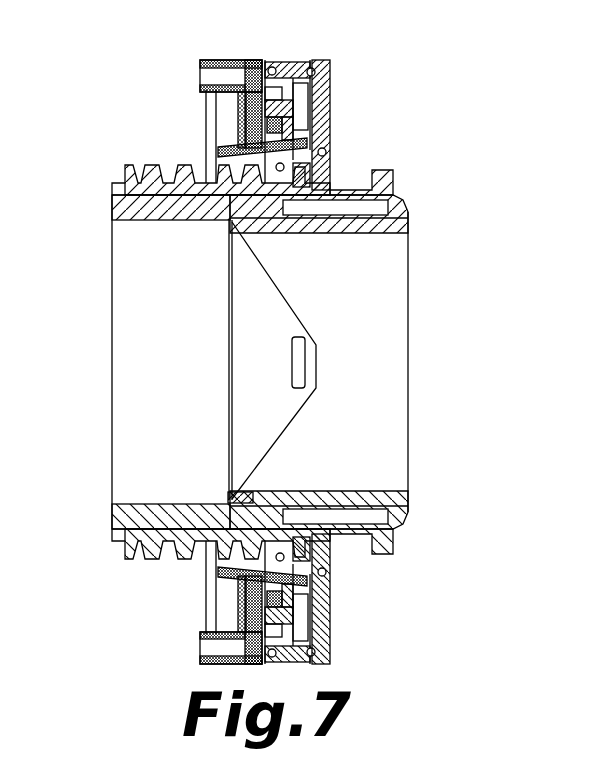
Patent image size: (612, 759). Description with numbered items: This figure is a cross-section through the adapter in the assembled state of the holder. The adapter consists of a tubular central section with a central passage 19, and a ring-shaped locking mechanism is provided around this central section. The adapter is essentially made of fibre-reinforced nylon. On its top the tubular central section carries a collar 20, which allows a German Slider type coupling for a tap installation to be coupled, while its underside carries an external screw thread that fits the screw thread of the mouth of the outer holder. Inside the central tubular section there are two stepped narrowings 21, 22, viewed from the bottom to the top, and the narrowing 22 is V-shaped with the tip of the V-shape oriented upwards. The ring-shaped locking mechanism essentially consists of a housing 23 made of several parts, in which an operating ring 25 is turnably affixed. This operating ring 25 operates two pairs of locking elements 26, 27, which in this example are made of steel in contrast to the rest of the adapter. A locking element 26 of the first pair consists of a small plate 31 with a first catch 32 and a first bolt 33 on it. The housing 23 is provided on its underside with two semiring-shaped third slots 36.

The central passage 19 is at (356, 355).
The collar 20 is at (393, 193).
The stepped narrowing 21 is at (229, 313).
The stepped narrowing 22 is at (252, 260).
The housing 23 is at (330, 122).
The operating ring 25 is at (305, 52).
The locking element 26 is at (331, 98).
The locking element 27 is at (293, 362).
The small plate 31 is at (245, 110).
The first catch 32 is at (276, 122).
The first bolt 33 is at (200, 62).
The third slot 36 is at (233, 588).